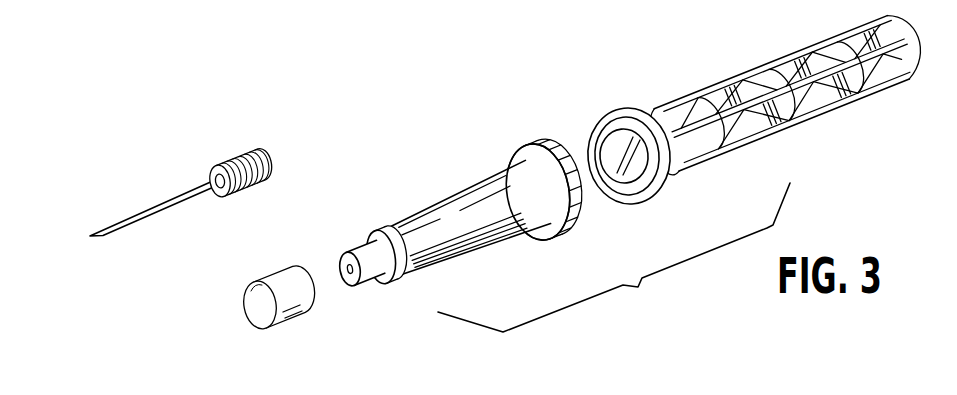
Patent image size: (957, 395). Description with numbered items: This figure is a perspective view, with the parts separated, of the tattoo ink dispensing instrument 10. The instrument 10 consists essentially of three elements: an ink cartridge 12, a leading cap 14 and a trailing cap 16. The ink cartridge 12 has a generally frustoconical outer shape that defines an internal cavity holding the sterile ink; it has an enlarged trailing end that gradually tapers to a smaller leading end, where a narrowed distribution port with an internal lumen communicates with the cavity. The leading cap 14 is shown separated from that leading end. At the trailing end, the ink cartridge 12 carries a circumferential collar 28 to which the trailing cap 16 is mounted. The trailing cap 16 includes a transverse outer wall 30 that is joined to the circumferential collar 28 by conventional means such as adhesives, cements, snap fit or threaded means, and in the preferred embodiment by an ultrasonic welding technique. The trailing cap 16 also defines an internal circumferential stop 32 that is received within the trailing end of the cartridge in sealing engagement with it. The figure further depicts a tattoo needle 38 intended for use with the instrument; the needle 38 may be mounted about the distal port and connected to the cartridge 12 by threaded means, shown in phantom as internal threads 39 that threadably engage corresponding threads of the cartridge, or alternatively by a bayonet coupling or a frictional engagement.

The tattoo ink dispensing instrument 10 is at (614, 257).
The ink cartridge 12 is at (479, 198).
The leading cap 14 is at (287, 325).
The trailing cap 16 is at (870, 100).
The circumferential collar 28 is at (569, 236).
The transverse outer wall 30 is at (647, 206).
The internal circumferential stop 32 is at (615, 147).
The tattoo needle 38 is at (157, 198).
The internal threads 39 is at (273, 158).